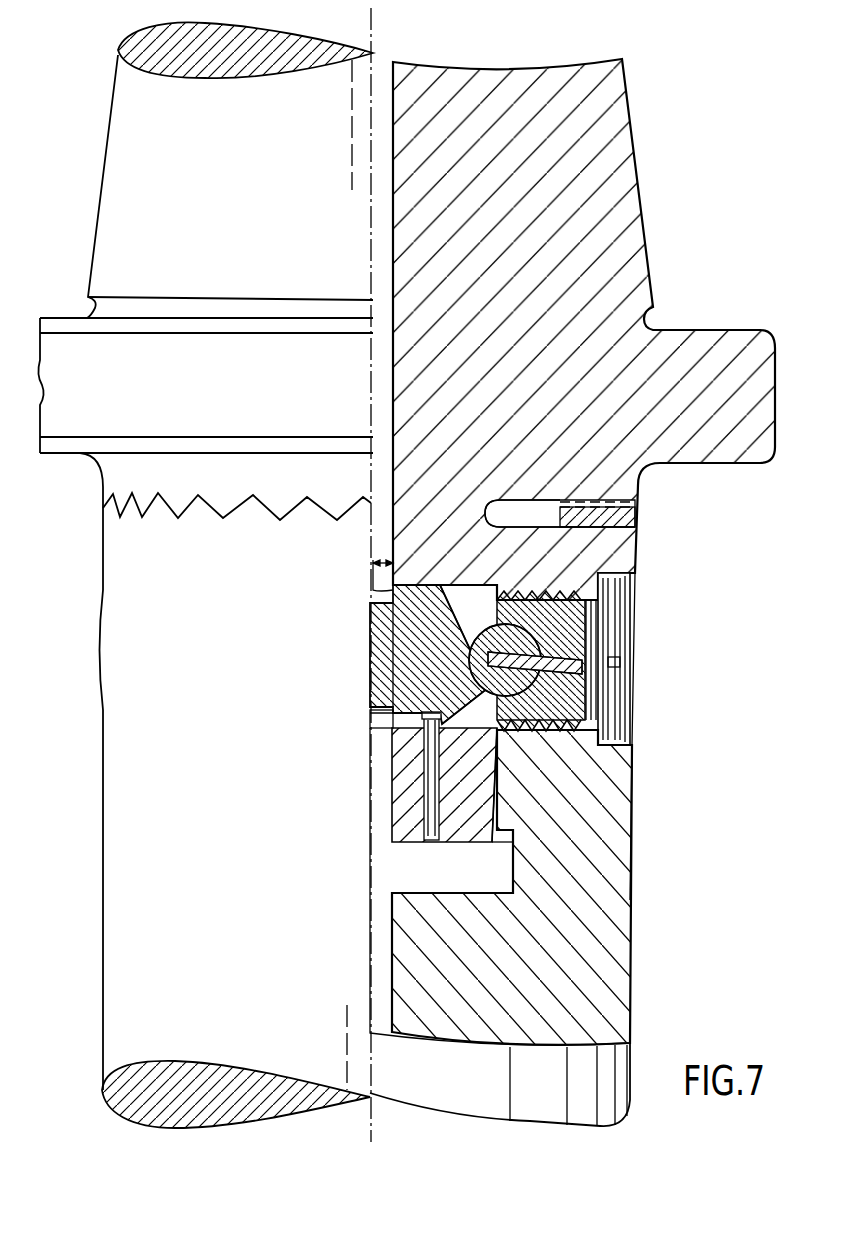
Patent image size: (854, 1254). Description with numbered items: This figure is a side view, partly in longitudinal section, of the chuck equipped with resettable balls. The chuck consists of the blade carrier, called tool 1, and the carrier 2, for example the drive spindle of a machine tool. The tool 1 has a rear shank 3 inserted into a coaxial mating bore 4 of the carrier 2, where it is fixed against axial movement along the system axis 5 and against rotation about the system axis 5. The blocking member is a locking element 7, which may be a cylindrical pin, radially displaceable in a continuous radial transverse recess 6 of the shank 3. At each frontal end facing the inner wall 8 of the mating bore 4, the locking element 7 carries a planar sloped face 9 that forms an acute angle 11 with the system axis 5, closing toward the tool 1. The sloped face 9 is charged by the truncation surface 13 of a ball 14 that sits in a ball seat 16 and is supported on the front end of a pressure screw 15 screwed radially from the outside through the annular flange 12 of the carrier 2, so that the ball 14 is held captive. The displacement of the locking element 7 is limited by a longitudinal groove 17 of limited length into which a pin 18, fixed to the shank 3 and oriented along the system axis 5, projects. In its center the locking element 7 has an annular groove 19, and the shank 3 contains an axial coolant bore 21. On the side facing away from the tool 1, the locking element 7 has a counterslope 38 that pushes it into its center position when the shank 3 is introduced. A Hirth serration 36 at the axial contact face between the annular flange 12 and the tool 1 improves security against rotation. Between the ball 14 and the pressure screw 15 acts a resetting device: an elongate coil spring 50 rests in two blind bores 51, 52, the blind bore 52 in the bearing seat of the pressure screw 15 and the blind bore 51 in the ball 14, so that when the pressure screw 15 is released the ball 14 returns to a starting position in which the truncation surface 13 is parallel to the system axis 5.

The tool 1 is at (645, 203).
The carrier 2 is at (631, 856).
The shank 3 is at (482, 836).
The mating bore 4 is at (498, 766).
The system axis 5 is at (372, 18).
The transverse recess 6 is at (486, 592).
The locking element 7 is at (388, 632).
The inner wall 8 is at (488, 800).
The sloped face 9 is at (448, 585).
The acute angle 11 is at (392, 560).
The annular flange 12 is at (620, 780).
The truncation surface 13 is at (462, 662).
The ball 14 is at (465, 704).
The pressure screw 15 is at (612, 637).
The ball seat 16 is at (464, 636).
The longitudinal groove 17 is at (415, 655).
The pin 18 is at (432, 840).
The annular groove 19 is at (368, 722).
The axial coolant bore 21 is at (387, 379).
The Hirth serration 36 is at (106, 503).
The counterslope 38 is at (468, 720).
The coil spring 50 is at (545, 600).
The blind bore 51 is at (525, 705).
The blind bore 52 is at (510, 598).